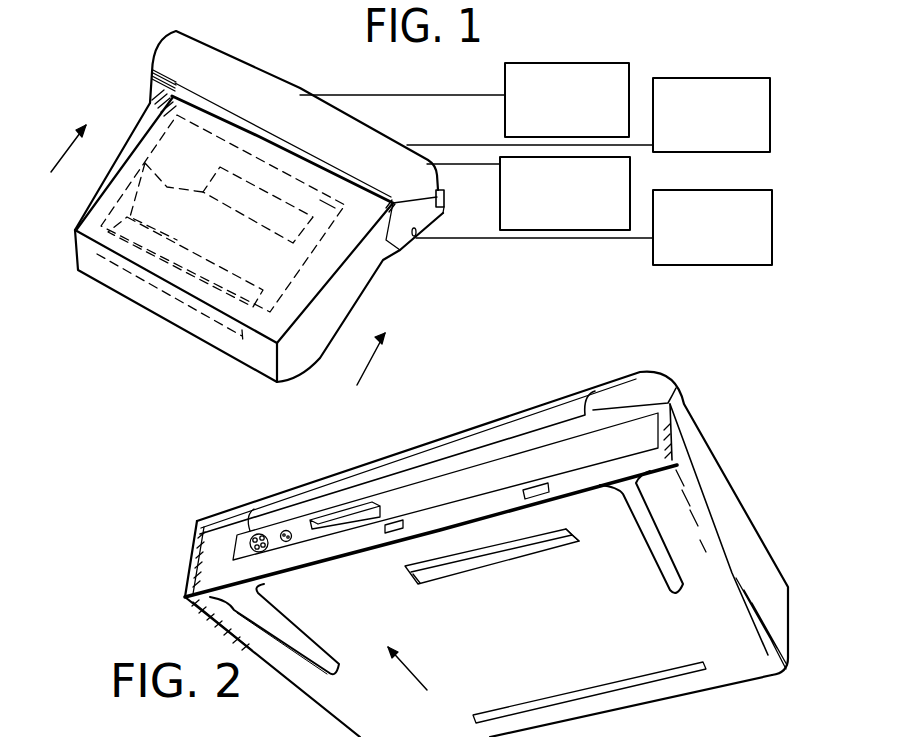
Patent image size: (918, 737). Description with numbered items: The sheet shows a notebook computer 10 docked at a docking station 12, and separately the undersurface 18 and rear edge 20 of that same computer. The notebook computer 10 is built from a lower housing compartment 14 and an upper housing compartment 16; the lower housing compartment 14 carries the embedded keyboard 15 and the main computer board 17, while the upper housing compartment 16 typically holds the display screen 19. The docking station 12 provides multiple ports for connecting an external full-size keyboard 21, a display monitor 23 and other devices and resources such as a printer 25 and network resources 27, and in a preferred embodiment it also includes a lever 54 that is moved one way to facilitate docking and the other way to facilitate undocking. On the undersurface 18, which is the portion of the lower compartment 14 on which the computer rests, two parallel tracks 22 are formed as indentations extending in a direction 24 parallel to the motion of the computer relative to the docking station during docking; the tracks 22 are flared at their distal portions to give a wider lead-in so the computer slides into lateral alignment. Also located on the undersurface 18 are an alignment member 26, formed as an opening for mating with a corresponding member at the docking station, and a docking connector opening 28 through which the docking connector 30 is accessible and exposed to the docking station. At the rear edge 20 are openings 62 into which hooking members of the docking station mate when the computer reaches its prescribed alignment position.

In FIG. 1, the notebook computer 10 is at (113, 181).
In FIG. 2, the notebook computer 10 is at (643, 359).
In FIG. 1, the docking station 12 is at (278, 82).
In FIG. 1, the lower housing compartment 14 is at (293, 360).
In FIG. 2, the lower housing compartment 14 is at (193, 547).
In FIG. 1, the embedded keyboard 15 is at (193, 231).
In FIG. 1, the upper housing compartment 16 is at (322, 208).
In FIG. 2, the upper housing compartment 16 is at (220, 518).
In FIG. 1, the main computer board 17 is at (203, 147).
In FIG. 2, the undersurface 18 is at (468, 656).
In FIG. 1, the display screen 19 is at (170, 191).
In FIG. 2, the rear edge 20 is at (228, 583).
In FIG. 1, the full-size keyboard 21 is at (630, 182).
In FIG. 2, the tracks 22 is at (298, 635).
In FIG. 1, the display monitor 23 is at (558, 62).
In FIG. 1, the direction 24 is at (68, 148).
In FIG. 2, the direction 24 is at (408, 669).
In FIG. 1, the printer 25 is at (697, 77).
In FIG. 2, the alignment member 26 is at (570, 693).
In FIG. 1, the network resources 27 is at (707, 190).
In FIG. 2, the docking connector opening 28 is at (577, 548).
In FIG. 2, the docking connector 30 is at (430, 579).
In FIG. 1, the lever 54 is at (445, 193).
In FIG. 2, the openings 62 is at (398, 520).